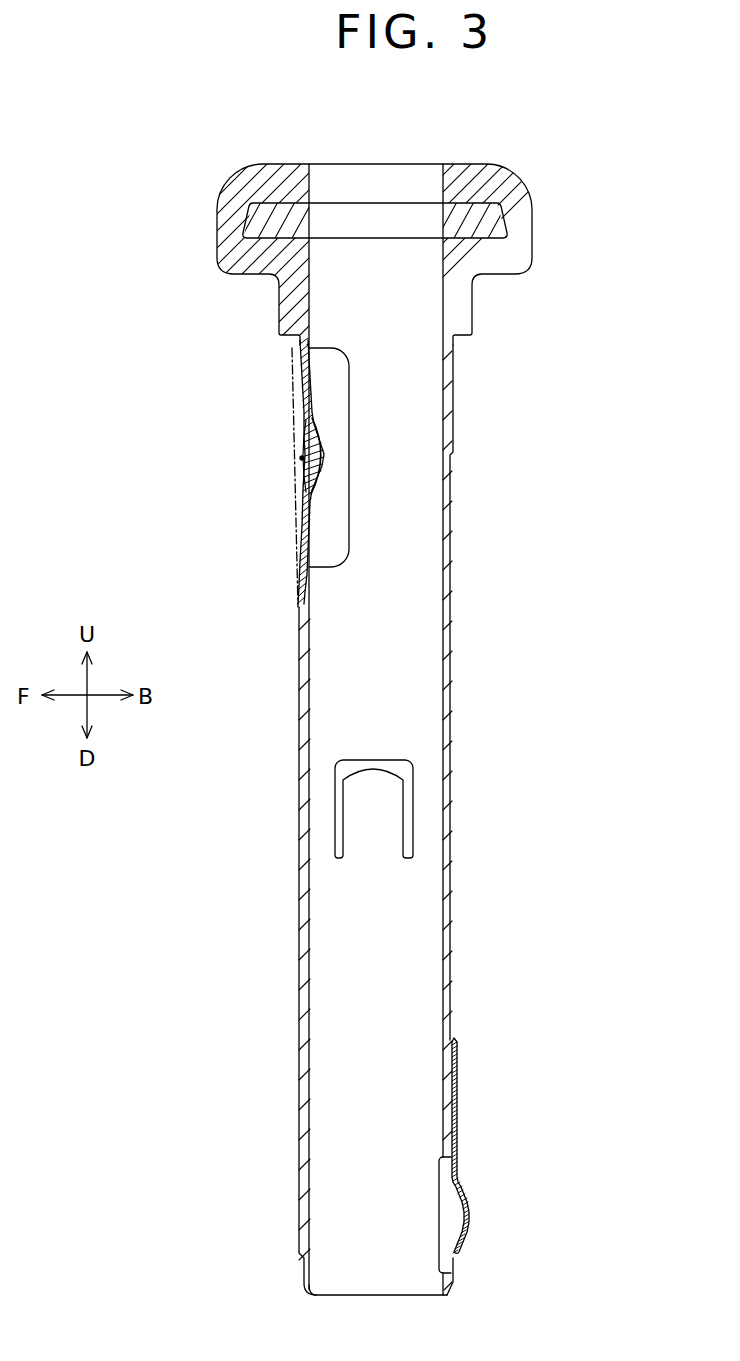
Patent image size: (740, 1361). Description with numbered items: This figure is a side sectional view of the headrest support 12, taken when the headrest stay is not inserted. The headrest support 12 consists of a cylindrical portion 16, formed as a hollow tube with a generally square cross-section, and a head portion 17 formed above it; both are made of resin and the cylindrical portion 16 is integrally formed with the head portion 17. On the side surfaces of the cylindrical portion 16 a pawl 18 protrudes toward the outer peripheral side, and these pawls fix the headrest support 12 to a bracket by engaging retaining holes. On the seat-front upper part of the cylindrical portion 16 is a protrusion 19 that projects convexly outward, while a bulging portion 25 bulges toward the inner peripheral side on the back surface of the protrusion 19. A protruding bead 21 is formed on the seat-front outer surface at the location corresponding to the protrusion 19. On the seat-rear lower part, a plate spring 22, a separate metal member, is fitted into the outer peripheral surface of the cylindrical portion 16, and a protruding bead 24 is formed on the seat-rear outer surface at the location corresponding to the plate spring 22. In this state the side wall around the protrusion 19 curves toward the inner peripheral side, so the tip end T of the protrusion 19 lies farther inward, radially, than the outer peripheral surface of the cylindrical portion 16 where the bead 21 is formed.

The headrest support 12 is at (170, 188).
The cylindrical portion 16 is at (456, 1295).
The head portion 17 is at (480, 335).
The pawl 18 is at (370, 770).
The protrusion 19 is at (312, 432).
The protruding bead 21 is at (299, 930).
The plate spring 22 is at (470, 1222).
The protruding bead 24 is at (453, 398).
The bulging portion 25 is at (306, 462).
The tip end T is at (302, 458).